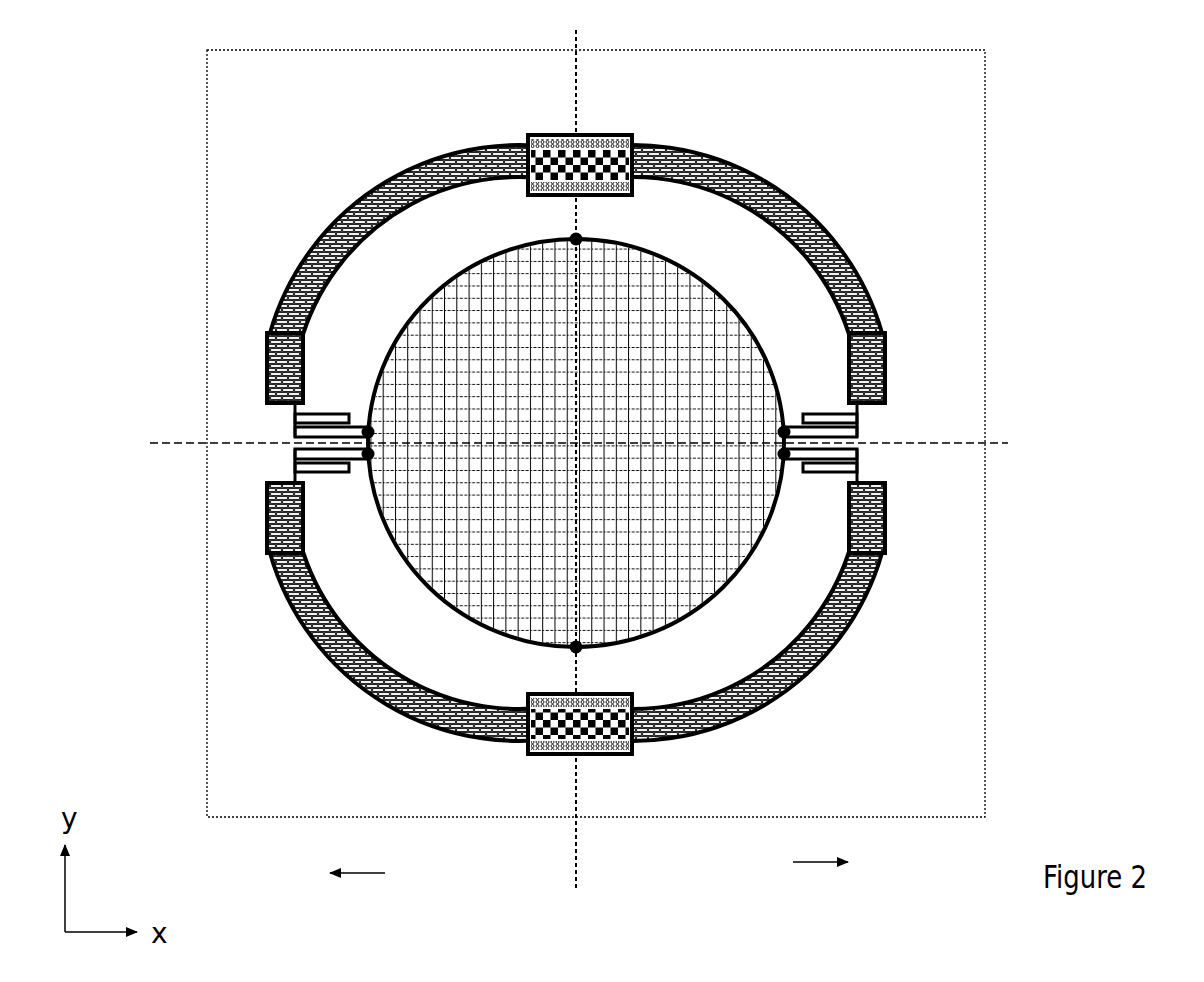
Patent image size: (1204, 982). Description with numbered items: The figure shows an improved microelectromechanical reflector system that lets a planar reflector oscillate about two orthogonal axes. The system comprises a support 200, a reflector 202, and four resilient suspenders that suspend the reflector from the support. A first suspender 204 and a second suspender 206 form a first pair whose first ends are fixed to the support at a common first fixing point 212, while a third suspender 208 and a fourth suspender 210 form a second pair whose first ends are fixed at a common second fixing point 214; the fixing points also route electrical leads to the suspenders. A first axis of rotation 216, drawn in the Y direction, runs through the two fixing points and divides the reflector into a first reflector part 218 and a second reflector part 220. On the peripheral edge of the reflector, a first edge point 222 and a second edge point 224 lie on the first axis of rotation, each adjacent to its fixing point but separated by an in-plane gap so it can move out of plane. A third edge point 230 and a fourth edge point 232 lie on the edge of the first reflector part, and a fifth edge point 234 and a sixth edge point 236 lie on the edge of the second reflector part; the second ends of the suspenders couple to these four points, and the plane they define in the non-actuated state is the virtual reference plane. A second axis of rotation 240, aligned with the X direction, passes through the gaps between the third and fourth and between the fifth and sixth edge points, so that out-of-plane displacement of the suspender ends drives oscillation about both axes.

The support 200 is at (952, 192).
The reflector 202 is at (680, 297).
The first suspender 204 is at (763, 178).
The second suspender 206 is at (430, 158).
The third suspender 208 is at (340, 672).
The fourth suspender 210 is at (810, 673).
The first fixing point 212 is at (593, 133).
The second fixing point 214 is at (593, 757).
The first axis of rotation 216 is at (576, 877).
The first reflector part 218 is at (820, 880).
The second reflector part 220 is at (357, 891).
The first edge point 222 is at (582, 238).
The second edge point 224 is at (583, 648).
The third edge point 230 is at (786, 426).
The fourth edge point 232 is at (786, 460).
The fifth edge point 234 is at (366, 426).
The sixth edge point 236 is at (366, 460).
The second axis of rotation 240 is at (957, 442).